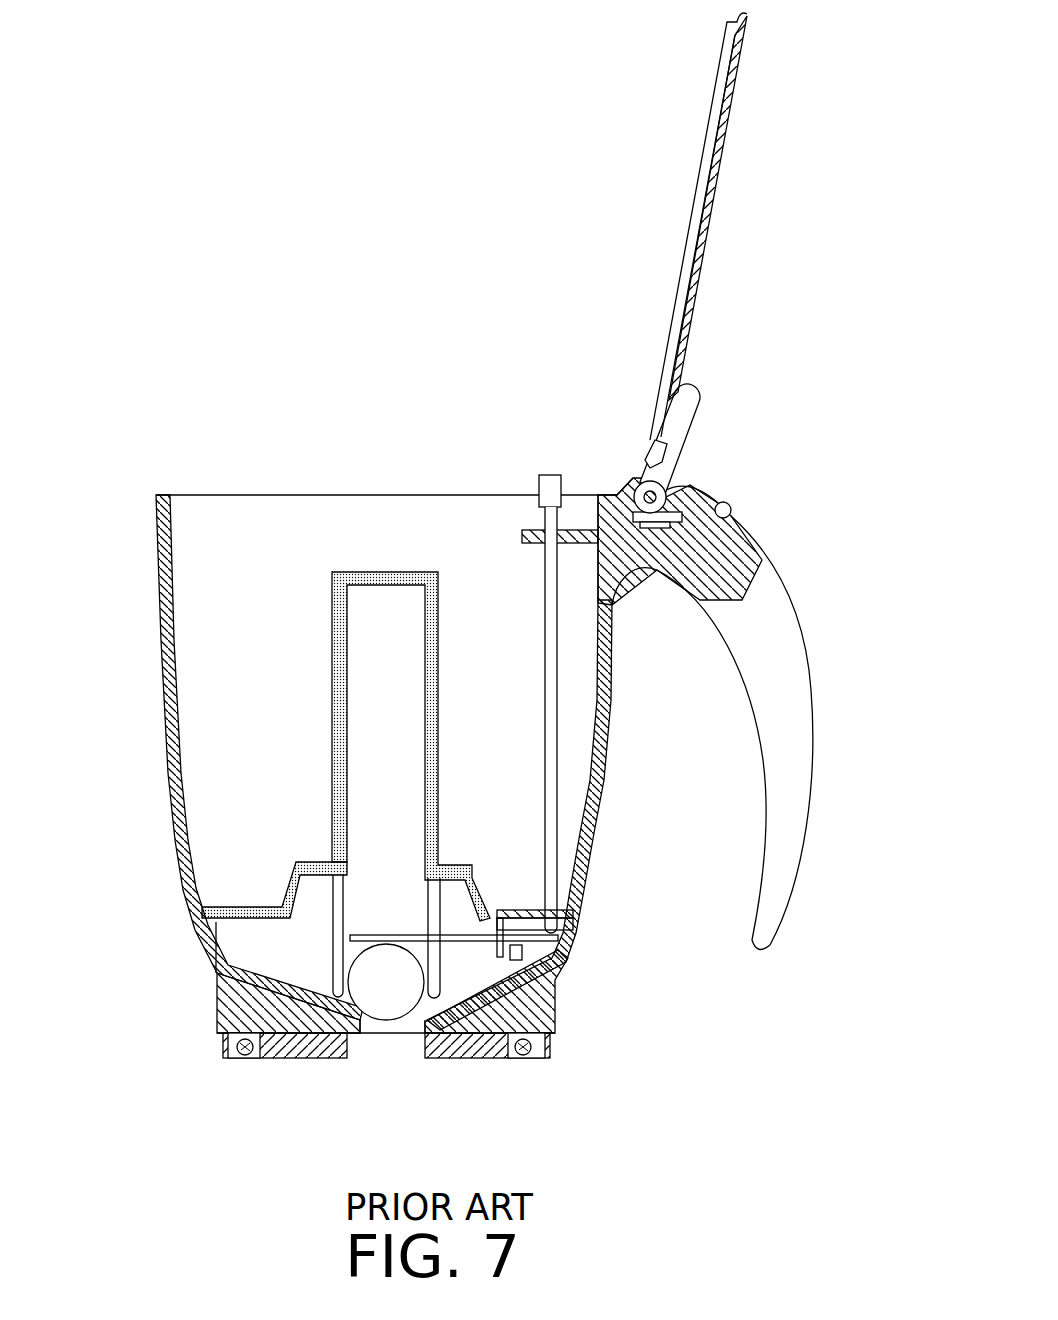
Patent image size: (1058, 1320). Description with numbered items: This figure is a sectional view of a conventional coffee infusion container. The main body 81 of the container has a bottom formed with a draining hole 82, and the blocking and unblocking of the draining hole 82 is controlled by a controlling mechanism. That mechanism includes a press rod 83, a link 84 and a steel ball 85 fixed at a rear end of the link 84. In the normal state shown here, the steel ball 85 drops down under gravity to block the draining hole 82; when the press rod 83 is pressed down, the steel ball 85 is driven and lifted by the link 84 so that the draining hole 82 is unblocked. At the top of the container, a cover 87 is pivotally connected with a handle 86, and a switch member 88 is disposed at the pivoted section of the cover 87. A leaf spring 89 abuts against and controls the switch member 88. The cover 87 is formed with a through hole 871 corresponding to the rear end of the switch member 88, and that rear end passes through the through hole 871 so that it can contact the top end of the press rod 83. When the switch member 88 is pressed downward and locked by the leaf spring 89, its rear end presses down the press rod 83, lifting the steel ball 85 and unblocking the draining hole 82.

The main body 81 is at (170, 773).
The draining hole 82 is at (386, 1030).
The press rod 83 is at (545, 570).
The link 84 is at (552, 995).
The steel ball 85 is at (377, 973).
The handle 86 is at (792, 685).
The cover 87 is at (712, 200).
The through hole 871 is at (670, 398).
The switch member 88 is at (683, 450).
The leaf spring 89 is at (655, 540).